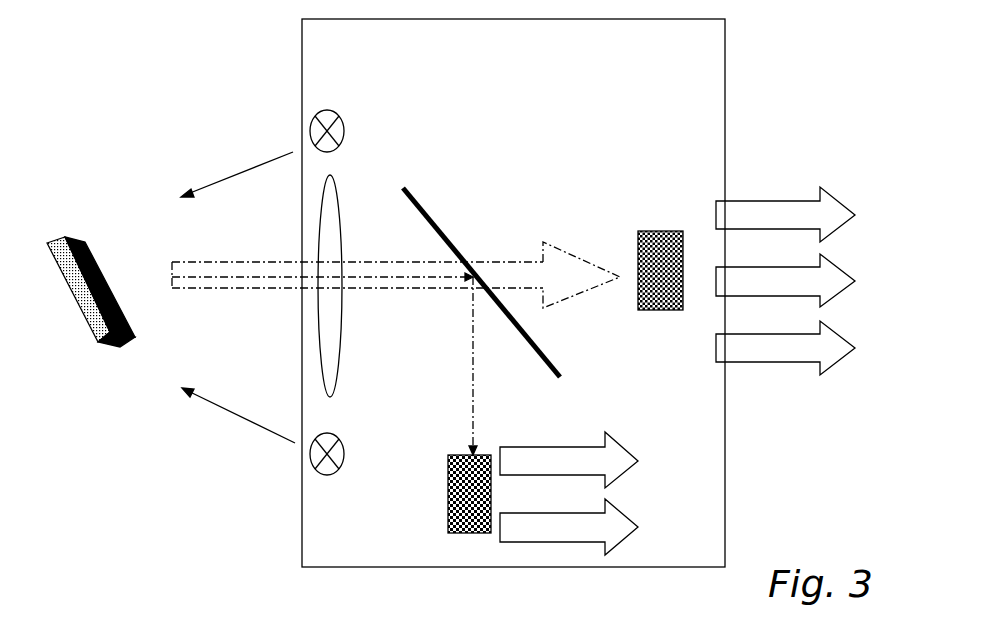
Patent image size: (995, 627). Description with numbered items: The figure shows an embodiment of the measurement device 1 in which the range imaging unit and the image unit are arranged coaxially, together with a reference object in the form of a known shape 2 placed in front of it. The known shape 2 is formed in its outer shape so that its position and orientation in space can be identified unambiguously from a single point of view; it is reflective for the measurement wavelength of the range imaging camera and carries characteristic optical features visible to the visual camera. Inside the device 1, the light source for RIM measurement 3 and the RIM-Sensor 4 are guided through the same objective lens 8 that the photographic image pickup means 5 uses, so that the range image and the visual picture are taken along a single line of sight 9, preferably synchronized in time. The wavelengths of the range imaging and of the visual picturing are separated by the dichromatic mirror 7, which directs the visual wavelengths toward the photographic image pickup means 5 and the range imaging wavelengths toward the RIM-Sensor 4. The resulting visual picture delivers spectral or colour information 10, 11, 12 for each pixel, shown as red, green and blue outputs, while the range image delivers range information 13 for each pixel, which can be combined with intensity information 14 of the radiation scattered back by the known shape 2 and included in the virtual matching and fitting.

The device 1 is at (445, 293).
The known shape 2 is at (91, 265).
The light source for RIM measurement 3 is at (250, 115).
The RIM-Sensor 4 is at (355, 513).
The photographic image pickup means 5 is at (725, 218).
The dichromatic mirror 7 is at (608, 218).
The objective lens 8 is at (247, 264).
The line of sight 9 is at (396, 373).
The spectral or colour information 10 is at (758, 226).
The spectral or colour information 11 is at (750, 292).
The spectral or colour information 12 is at (758, 359).
The range information 13 is at (538, 473).
The intensity information 14 is at (528, 540).